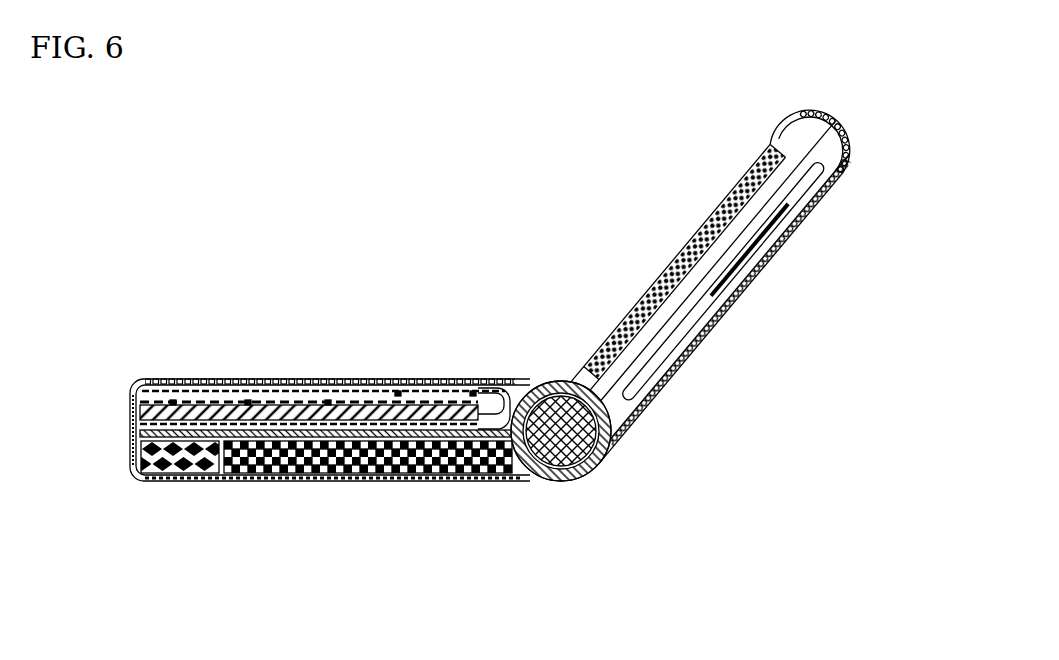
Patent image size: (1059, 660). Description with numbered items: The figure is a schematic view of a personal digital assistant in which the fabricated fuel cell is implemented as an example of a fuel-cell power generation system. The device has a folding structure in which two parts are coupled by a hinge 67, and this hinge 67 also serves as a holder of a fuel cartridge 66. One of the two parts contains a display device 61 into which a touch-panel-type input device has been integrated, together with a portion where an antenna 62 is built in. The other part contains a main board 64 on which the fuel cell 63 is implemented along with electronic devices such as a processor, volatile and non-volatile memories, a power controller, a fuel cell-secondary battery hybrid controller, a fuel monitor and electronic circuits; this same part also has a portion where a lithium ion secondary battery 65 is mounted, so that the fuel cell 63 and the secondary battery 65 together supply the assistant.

The display device 61 is at (712, 222).
The antenna 62 is at (736, 283).
The fuel cell 63 is at (358, 393).
The main board 64 is at (387, 477).
The lithium ion secondary battery 65 is at (178, 480).
The fuel cartridge 66 is at (556, 400).
The hinge 67 is at (592, 474).